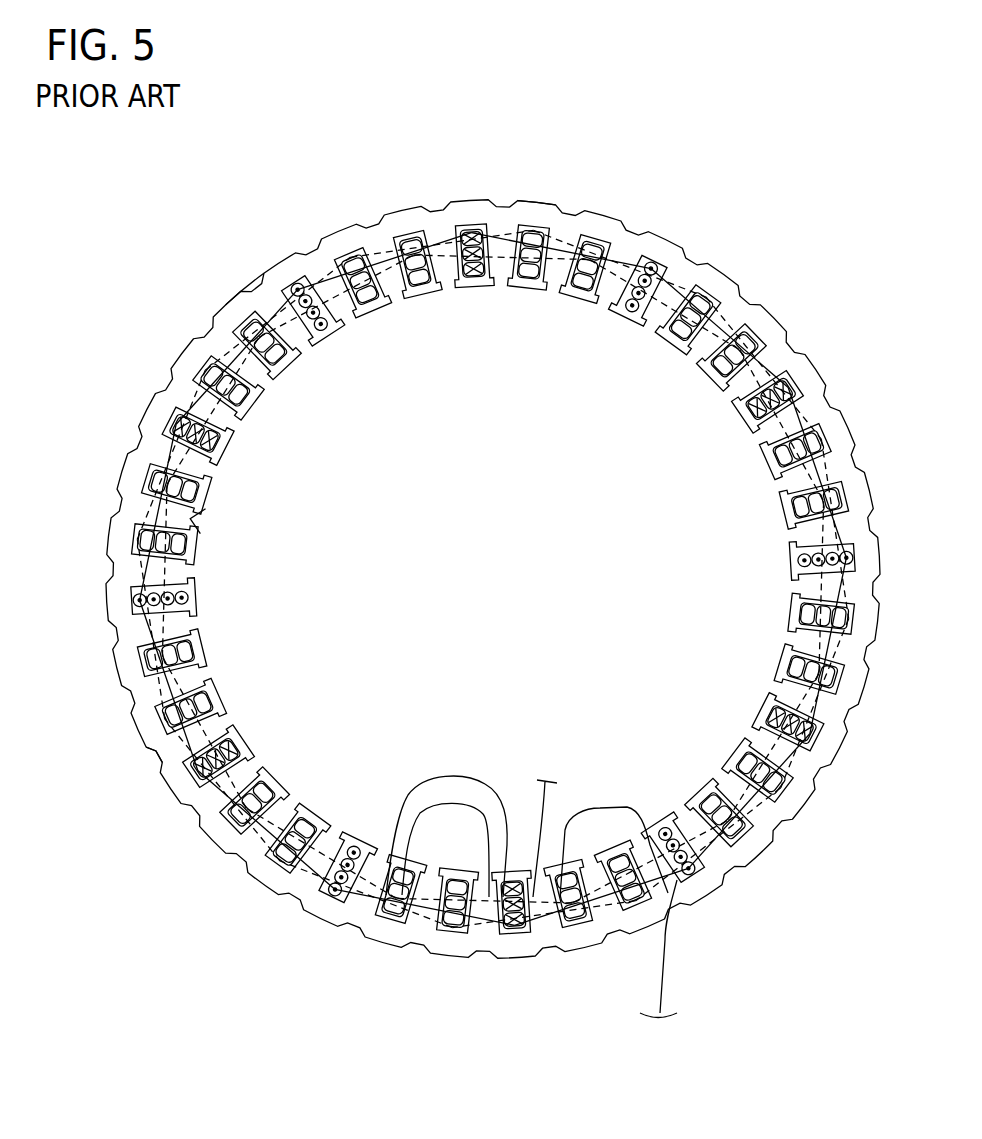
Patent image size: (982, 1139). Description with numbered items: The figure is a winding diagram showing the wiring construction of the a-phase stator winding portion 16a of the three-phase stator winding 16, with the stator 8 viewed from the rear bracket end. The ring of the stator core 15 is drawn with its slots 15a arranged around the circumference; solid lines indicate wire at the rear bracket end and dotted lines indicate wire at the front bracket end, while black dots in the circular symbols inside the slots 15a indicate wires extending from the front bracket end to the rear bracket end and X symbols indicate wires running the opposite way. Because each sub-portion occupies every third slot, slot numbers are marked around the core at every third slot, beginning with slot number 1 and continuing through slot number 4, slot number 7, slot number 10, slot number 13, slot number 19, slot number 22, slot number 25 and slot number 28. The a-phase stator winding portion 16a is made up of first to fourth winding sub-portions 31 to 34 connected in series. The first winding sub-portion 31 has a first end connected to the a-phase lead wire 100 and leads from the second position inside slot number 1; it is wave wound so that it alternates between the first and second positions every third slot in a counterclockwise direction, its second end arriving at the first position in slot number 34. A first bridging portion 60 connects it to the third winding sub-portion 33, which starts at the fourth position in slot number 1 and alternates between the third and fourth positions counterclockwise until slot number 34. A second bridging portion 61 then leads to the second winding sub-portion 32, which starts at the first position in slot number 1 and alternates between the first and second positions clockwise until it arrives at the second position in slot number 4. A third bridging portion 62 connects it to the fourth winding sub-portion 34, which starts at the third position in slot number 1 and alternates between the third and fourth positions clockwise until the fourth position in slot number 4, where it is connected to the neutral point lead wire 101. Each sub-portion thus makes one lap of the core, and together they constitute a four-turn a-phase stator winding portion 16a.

The stator 8 is at (299, 170).
The stator core 15 is at (544, 216).
The slots 15a is at (254, 299).
The coil 22 is at (315, 320).
The coil 19 is at (472, 273).
The three-phase stator winding 16 is at (636, 303).
The coil 13 is at (757, 405).
The coil 25 is at (216, 436).
The a-phase stator winding portion 16a is at (200, 519).
The coil 28 is at (185, 599).
The coil 10 is at (804, 561).
The second winding sub-portion 32 is at (777, 682).
The coil 7 is at (780, 722).
The first bridging portion 60 is at (407, 787).
The second bridging portion 61 is at (438, 775).
The a-phase lead wire 100 is at (537, 785).
The third bridging portion 62 is at (597, 807).
The first winding sub-portion 31 is at (697, 810).
The slot number four 4 is at (675, 839).
The fourth winding sub-portion 34 is at (274, 970).
The third winding sub-portion 33 is at (170, 752).
The slot number one 1 is at (513, 889).
The neutral point lead wire 101 is at (665, 968).